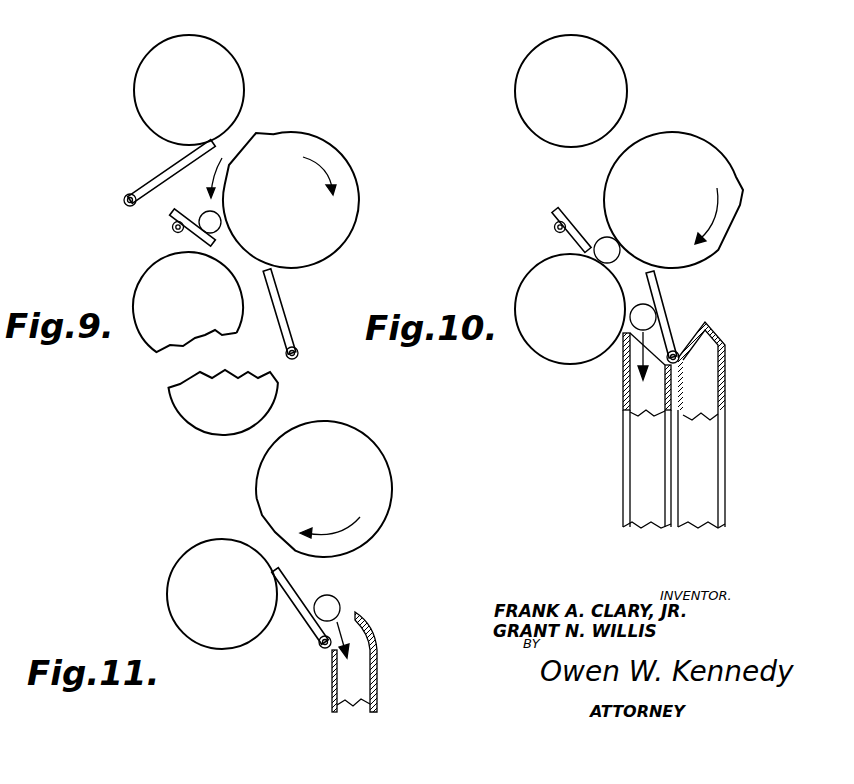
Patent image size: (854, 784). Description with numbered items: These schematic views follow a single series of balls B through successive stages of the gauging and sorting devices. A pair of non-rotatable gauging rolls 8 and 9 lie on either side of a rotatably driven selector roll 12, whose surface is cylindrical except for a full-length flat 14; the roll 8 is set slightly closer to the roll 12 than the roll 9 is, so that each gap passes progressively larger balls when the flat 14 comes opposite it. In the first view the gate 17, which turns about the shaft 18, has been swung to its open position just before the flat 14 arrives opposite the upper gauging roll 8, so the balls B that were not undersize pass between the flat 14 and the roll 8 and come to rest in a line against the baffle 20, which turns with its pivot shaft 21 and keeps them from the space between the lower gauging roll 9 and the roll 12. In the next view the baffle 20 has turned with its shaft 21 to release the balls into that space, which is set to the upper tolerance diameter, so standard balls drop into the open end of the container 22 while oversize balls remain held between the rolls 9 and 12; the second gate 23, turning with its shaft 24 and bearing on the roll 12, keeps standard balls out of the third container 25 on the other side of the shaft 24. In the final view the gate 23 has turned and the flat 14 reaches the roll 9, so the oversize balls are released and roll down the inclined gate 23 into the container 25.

In FIG. 9, the upper gauging roll 8 is at (147, 90).
In FIG. 10, the upper gauging roll 8 is at (523, 80).
In FIG. 9, the lower gauging roll 9 is at (147, 286).
In FIG. 10, the lower gauging roll 9 is at (530, 292).
In FIG. 11, the lower gauging roll 9 is at (190, 568).
In FIG. 9, the selector roll 12 is at (340, 210).
In FIG. 10, the selector roll 12 is at (697, 153).
In FIG. 11, the selector roll 12 is at (372, 474).
In FIG. 9, the flat 14 is at (248, 153).
In FIG. 10, the flat 14 is at (735, 213).
In FIG. 11, the flat 14 is at (272, 527).
In FIG. 9, the gate 17 is at (163, 176).
In FIG. 9, the shaft 18 is at (124, 197).
In FIG. 9, the baffle 20 is at (192, 233).
In FIG. 10, the baffle 20 is at (573, 238).
In FIG. 9, the pivot shaft 21 is at (170, 226).
In FIG. 10, the pivot shaft 21 is at (550, 222).
In FIG. 10, the container 22 is at (633, 373).
In FIG. 9, the second gate 23 is at (285, 305).
In FIG. 10, the second gate 23 is at (665, 305).
In FIG. 11, the second gate 23 is at (293, 603).
In FIG. 10, the shaft 24 is at (683, 350).
In FIG. 11, the shaft 24 is at (320, 648).
In FIG. 10, the third container 25 is at (705, 395).
In FIG. 11, the third container 25 is at (358, 675).
In FIG. 9, the balls B is at (222, 222).
In FIG. 10, the balls B is at (601, 236).
In FIG. 11, the balls B is at (340, 600).